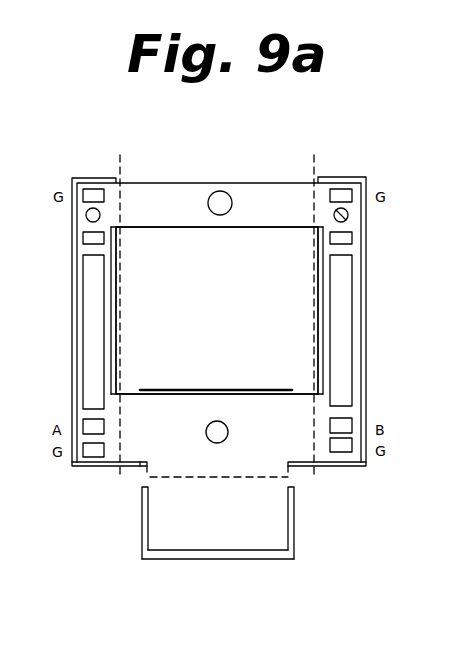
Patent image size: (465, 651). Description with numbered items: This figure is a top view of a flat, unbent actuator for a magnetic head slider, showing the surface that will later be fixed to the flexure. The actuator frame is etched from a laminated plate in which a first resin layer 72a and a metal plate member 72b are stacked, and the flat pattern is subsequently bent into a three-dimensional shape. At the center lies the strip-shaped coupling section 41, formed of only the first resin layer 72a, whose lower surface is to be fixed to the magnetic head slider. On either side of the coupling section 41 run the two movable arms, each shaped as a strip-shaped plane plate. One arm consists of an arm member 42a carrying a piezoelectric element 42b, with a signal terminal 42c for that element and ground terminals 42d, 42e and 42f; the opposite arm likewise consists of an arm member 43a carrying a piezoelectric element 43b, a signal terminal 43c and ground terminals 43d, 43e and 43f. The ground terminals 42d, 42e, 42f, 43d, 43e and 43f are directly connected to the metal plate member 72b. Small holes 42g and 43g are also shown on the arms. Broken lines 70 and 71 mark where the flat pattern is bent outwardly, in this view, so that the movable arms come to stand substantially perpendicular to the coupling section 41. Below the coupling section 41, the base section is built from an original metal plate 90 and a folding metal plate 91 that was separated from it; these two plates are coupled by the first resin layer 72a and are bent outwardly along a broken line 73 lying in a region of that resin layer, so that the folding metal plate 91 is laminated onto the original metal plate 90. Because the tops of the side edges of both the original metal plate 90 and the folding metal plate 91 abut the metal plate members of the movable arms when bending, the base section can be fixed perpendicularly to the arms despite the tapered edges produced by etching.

The coupling section 41 is at (176, 195).
The arm member 42a is at (357, 275).
The piezoelectric element 42b is at (347, 336).
The signal terminal 42c is at (348, 422).
The ground terminal 42d is at (352, 238).
The ground terminal 42e is at (347, 448).
The ground terminal 42f is at (342, 192).
The right ground hole 42g is at (350, 217).
The arm member 43a is at (78, 342).
The piezoelectric element 43b is at (92, 315).
The signal terminal 43c is at (83, 427).
The ground terminal 43d is at (83, 238).
The ground terminal 43e is at (80, 468).
The ground terminal 43f is at (83, 190).
The left ground hole 43g is at (85, 215).
The broken line 70 is at (314, 470).
The broken line 71 is at (120, 478).
The first resin layer 72a is at (270, 200).
The metal plate member 72b is at (220, 553).
The broken line 73 is at (243, 462).
The original metal plate 90 is at (137, 443).
The folding metal plate 91 is at (198, 533).